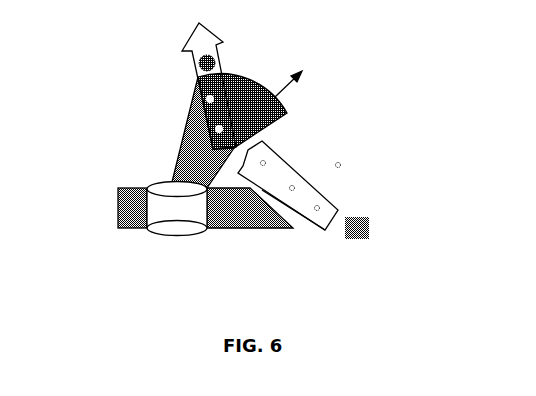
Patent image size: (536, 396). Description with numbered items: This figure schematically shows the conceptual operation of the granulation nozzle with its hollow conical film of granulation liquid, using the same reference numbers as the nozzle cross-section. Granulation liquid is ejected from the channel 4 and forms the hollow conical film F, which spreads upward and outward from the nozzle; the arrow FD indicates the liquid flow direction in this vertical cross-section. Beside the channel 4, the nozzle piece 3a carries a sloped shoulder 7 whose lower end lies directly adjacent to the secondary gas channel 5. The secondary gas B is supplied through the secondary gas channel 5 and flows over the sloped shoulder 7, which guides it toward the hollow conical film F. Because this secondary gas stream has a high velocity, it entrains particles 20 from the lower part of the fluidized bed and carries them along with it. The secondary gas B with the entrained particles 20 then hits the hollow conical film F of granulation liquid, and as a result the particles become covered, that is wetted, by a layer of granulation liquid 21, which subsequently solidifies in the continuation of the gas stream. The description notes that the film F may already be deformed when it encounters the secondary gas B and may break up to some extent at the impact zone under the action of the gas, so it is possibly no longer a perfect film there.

The layer of granulation liquid 21 is at (214, 57).
The particles 20 is at (307, 191).
The channel 4 is at (185, 237).
The piece 3a is at (244, 230).
The sloped shoulder 7 is at (298, 216).
The secondary gas channel 5 is at (329, 238).
The hollow conical film F is at (262, 88).
The liquid flow direction arrow FD is at (302, 79).
The secondary gas B is at (285, 162).